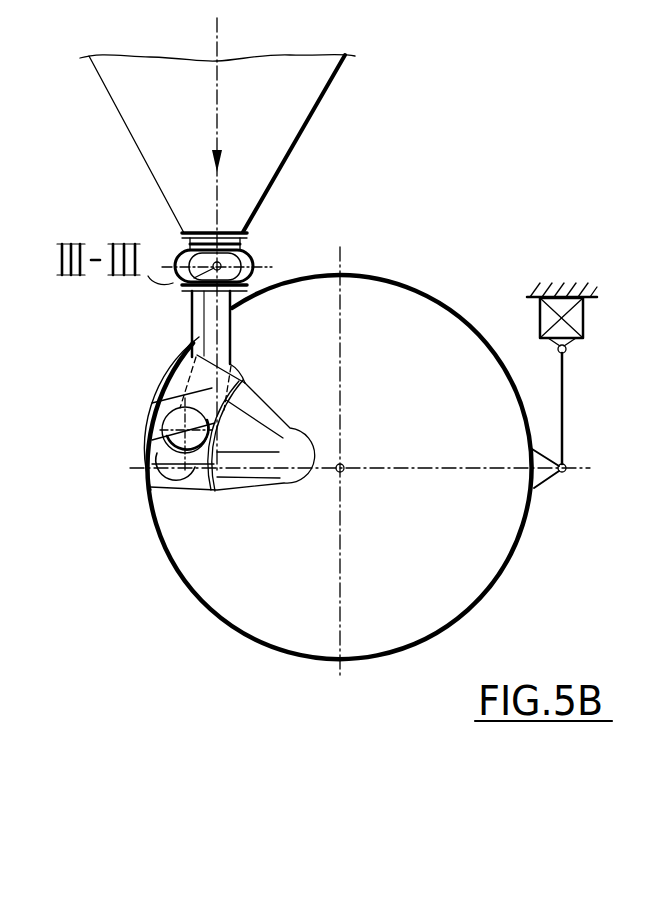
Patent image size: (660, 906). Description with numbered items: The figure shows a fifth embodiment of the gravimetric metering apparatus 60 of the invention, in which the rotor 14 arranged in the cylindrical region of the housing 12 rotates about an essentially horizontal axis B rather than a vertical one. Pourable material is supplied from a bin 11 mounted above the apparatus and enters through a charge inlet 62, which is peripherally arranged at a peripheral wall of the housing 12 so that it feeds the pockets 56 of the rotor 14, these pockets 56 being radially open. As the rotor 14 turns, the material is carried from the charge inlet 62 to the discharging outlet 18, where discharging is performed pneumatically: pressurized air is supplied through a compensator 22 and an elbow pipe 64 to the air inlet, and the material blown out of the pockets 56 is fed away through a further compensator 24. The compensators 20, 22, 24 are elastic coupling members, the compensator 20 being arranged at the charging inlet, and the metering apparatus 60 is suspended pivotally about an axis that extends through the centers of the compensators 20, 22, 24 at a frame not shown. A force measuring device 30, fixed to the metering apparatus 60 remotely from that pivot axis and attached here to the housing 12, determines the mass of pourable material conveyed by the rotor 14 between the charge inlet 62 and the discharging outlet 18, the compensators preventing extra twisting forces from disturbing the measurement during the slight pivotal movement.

The bin 11 is at (320, 98).
The metering apparatus 60 is at (470, 174).
The compensator 20 is at (243, 234).
The compensator 22 is at (297, 234).
The compensator 24 is at (252, 260).
The charge inlet 62 is at (192, 318).
The elbow pipe 64 is at (248, 292).
The rotor 14 is at (156, 381).
The pockets 56 is at (165, 460).
The discharging outlet 18 is at (150, 469).
The housing 12 is at (521, 547).
The axis B is at (344, 471).
The force measuring device 30 is at (541, 322).